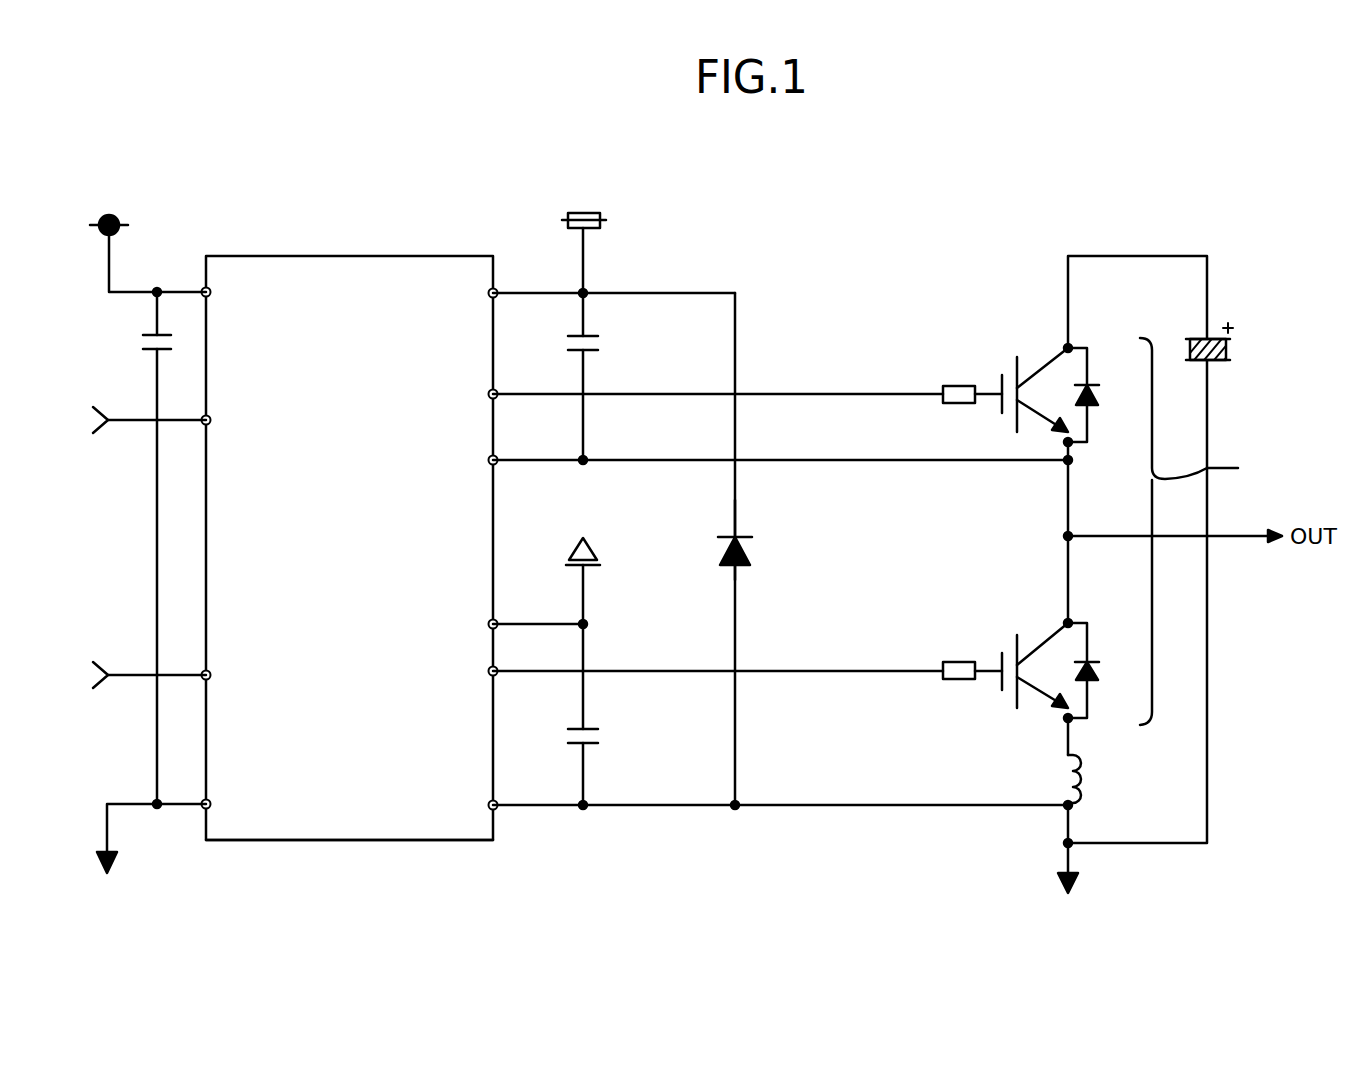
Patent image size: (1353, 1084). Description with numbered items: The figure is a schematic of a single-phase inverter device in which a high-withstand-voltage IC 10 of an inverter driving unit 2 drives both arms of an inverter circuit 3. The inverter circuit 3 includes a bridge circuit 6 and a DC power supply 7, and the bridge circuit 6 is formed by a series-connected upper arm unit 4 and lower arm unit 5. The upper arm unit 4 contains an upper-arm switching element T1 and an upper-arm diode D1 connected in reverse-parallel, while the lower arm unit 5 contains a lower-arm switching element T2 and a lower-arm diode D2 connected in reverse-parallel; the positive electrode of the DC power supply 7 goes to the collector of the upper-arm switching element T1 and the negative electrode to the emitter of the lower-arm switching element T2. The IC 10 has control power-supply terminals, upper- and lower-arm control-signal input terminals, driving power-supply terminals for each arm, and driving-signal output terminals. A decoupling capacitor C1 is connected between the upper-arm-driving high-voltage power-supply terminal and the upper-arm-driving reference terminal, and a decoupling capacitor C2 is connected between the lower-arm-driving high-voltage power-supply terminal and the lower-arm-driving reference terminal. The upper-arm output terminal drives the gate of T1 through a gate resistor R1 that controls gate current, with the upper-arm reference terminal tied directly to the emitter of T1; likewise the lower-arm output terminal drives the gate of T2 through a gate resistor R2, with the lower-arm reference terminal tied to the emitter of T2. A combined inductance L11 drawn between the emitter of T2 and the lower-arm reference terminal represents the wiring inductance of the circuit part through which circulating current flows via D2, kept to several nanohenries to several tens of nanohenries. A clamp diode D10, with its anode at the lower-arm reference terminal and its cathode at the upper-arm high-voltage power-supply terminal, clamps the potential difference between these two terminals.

The inverter driving unit 2 is at (357, 224).
The inverter circuit 3 is at (1150, 224).
The upper arm unit 4 is at (1064, 358).
The lower arm unit 5 is at (1060, 638).
The bridge circuit 6 is at (1198, 531).
The DC power supply 7 is at (1232, 348).
The high-withstand-voltage IC 10 is at (350, 840).
The decoupling capacitor C1 is at (598, 336).
The decoupling capacitor C2 is at (598, 729).
The upper-arm diode D1 is at (1093, 380).
The lower-arm diode D2 is at (1093, 657).
The clamp diode D10 is at (750, 550).
The upper-arm switching element T1 is at (1010, 370).
The lower-arm switching element T2 is at (1010, 647).
The gate resistor R1 is at (958, 403).
The gate resistor R2 is at (958, 680).
The combined inductance L11 is at (1086, 778).